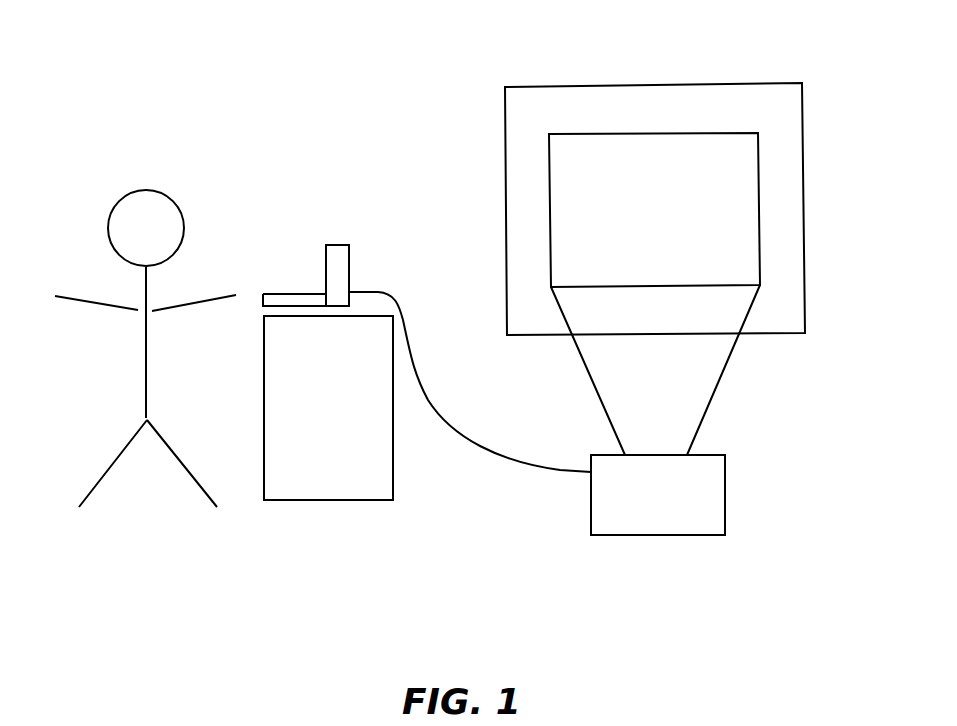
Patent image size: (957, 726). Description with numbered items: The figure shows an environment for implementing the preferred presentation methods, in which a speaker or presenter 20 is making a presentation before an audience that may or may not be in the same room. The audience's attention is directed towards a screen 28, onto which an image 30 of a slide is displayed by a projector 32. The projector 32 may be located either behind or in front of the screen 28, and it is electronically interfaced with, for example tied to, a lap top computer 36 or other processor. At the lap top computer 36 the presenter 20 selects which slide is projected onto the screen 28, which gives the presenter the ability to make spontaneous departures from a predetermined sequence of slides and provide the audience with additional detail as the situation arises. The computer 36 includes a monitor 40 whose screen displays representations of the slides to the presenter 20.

The presenter 20 is at (113, 347).
The screen 28 is at (793, 157).
The image 30 is at (600, 150).
The projector 32 is at (725, 498).
The lap top computer 36 is at (308, 285).
The monitor 40 is at (338, 245).